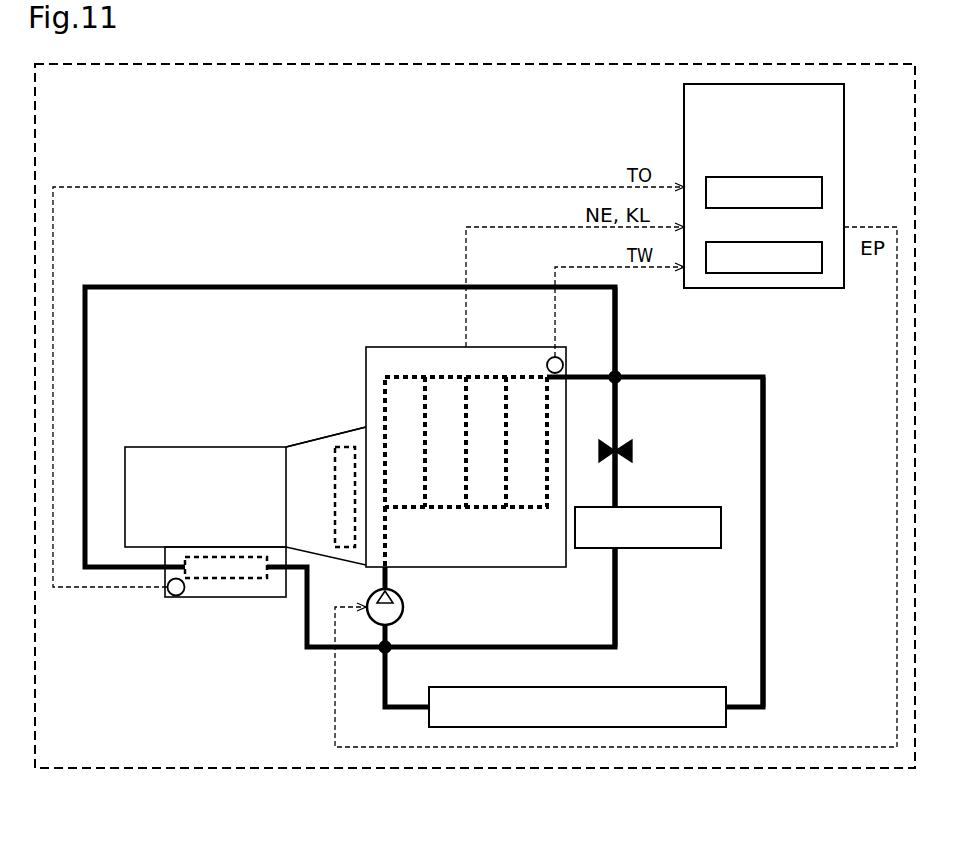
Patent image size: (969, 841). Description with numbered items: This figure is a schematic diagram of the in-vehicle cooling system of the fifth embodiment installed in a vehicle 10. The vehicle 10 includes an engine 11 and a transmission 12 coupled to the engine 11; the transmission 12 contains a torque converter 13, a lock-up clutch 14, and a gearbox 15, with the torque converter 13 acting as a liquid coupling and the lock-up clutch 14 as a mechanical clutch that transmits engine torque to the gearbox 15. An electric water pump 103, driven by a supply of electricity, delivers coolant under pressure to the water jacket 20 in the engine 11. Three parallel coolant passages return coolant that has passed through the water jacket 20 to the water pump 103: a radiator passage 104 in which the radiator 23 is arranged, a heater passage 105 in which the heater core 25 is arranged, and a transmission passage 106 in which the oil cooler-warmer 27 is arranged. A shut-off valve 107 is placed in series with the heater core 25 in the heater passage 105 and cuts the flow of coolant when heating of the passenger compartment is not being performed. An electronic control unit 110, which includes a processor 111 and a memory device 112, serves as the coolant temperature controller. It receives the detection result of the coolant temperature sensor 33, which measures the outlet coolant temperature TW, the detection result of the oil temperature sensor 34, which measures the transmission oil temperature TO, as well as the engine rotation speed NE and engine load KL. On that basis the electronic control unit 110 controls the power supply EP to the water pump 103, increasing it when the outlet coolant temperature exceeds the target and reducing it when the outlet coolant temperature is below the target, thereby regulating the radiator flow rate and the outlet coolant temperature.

The vehicle 10 is at (808, 769).
The engine 11 is at (527, 567).
The transmission 12 is at (174, 416).
The torque converter 13 is at (325, 437).
The lock-up clutch 14 is at (345, 447).
The gearbox 15 is at (222, 447).
The water jacket 20 is at (487, 507).
The radiator 23 is at (657, 687).
The heater core 25 is at (650, 507).
The oil cooler-warmer 27 is at (228, 578).
The coolant temperature sensor 33 is at (548, 359).
The oil temperature sensor 34 is at (176, 596).
The electric water pump 103 is at (403, 607).
The radiator passage 104 is at (766, 545).
The heater passage 105 is at (618, 587).
The transmission passage 106 is at (397, 286).
The shut-off valve 107 is at (634, 451).
The electronic control unit 110 is at (845, 114).
The processor 111 is at (754, 177).
The memory device 112 is at (754, 242).